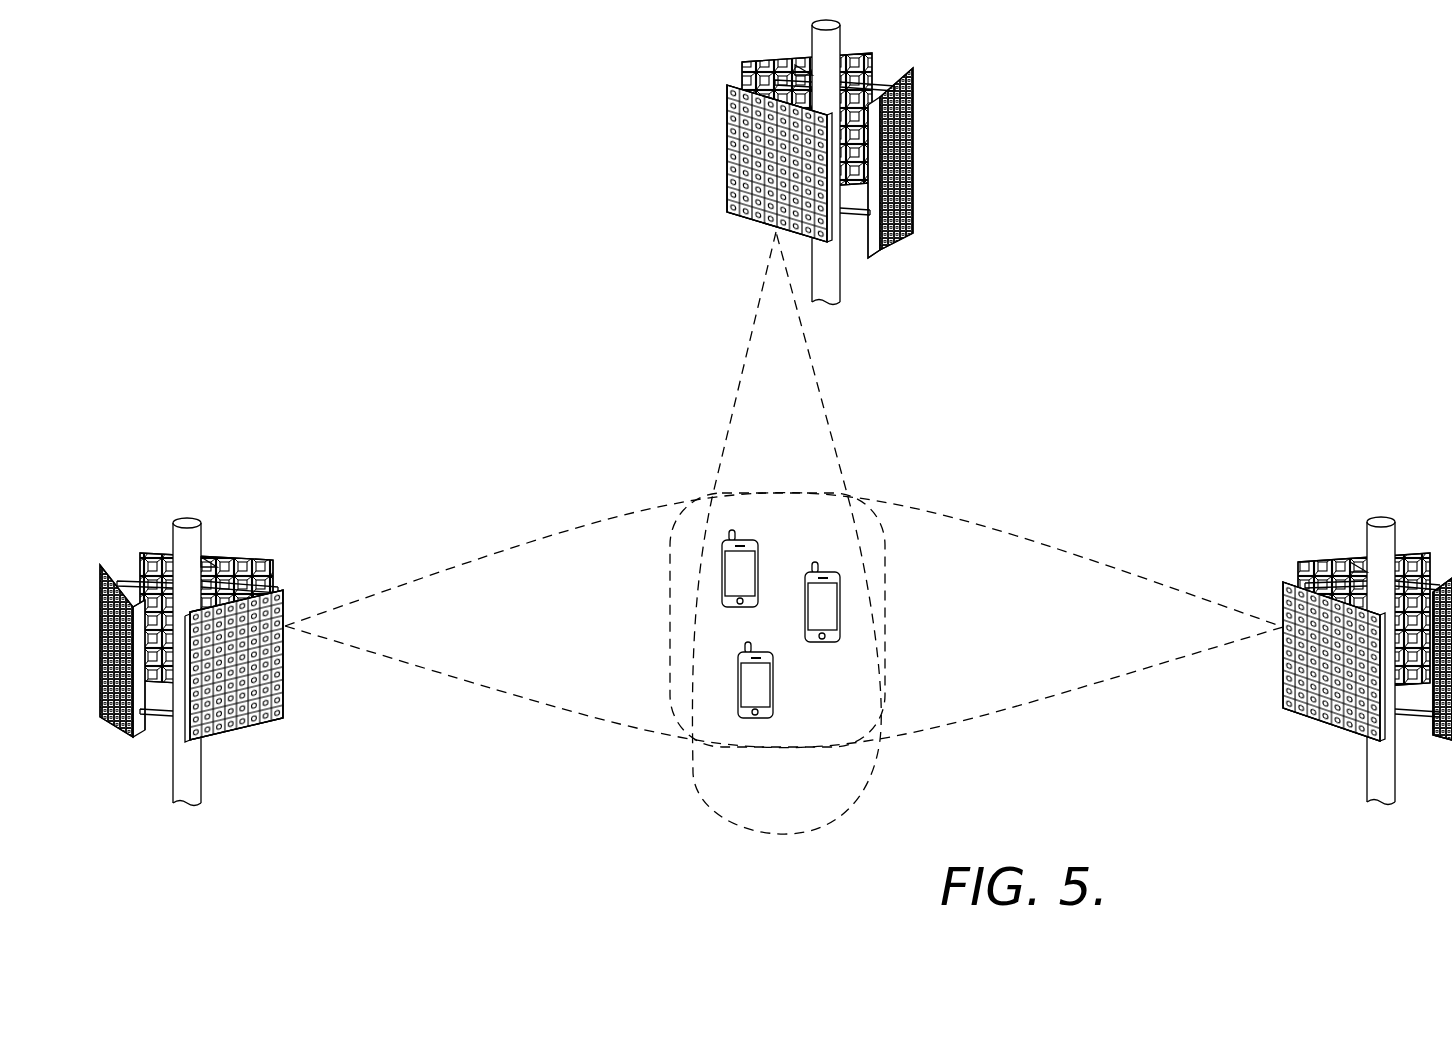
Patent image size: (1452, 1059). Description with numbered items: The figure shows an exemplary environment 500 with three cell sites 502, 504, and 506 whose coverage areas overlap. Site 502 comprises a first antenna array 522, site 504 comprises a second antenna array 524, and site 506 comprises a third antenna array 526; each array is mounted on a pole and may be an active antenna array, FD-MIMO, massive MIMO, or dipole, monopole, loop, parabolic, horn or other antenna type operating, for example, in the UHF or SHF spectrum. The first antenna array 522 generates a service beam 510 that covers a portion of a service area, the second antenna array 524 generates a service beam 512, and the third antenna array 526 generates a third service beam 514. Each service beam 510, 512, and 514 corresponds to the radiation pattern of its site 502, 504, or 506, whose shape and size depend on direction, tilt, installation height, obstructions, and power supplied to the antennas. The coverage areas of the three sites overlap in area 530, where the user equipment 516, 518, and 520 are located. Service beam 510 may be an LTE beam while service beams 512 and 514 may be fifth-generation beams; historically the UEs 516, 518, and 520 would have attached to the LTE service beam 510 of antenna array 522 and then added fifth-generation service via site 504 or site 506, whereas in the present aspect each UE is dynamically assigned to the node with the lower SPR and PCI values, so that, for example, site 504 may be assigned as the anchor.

The wireless communication system 500 is at (410, 211).
The first cell site 502 is at (227, 683).
The second cell site 504 is at (840, 162).
The third cell site 506 is at (1333, 661).
The service beam 510 is at (530, 540).
The service beam 512 is at (792, 836).
The third service beam 514 is at (1033, 540).
The user equipment 516 is at (750, 540).
The user equipment 518 is at (825, 643).
The user equipment 520 is at (773, 692).
The first antenna array 522 is at (287, 632).
The second antenna array 524 is at (772, 227).
The third antenna array 526 is at (1284, 631).
The overlap area 530 is at (722, 597).